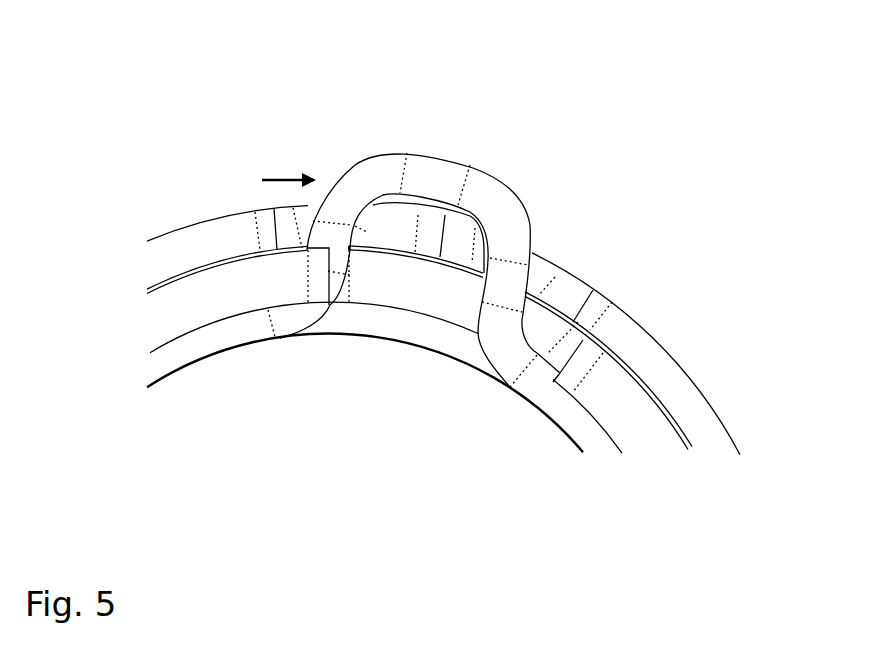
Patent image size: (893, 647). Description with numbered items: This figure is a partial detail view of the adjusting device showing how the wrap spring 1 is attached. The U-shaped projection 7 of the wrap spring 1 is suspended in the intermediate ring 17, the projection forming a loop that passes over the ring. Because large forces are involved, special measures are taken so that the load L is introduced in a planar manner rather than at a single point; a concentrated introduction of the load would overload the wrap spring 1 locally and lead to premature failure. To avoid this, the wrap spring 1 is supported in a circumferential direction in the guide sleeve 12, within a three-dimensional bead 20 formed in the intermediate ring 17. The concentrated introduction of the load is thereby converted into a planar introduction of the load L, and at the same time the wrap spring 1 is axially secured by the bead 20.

The wrap spring 1 is at (540, 433).
The U-shaped projection 7 is at (454, 163).
The guide sleeve 12 is at (650, 398).
The intermediate ring 17 is at (629, 315).
The three-dimensional bead 20 is at (553, 262).
The load L is at (276, 178).